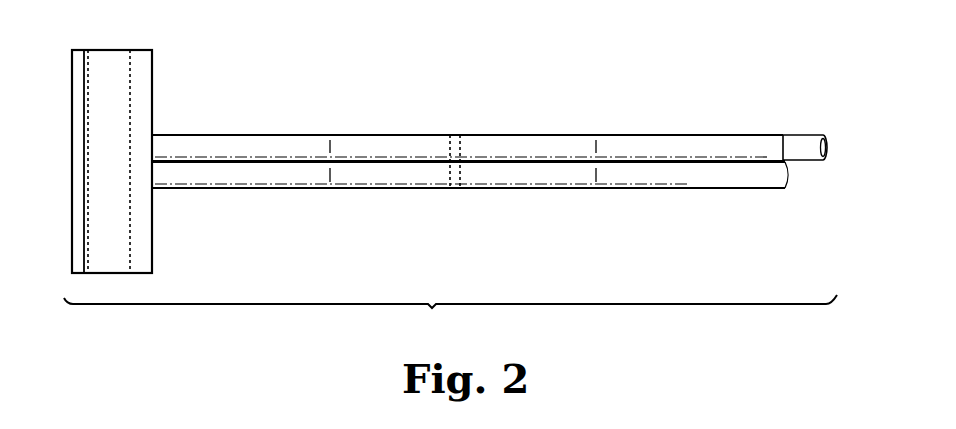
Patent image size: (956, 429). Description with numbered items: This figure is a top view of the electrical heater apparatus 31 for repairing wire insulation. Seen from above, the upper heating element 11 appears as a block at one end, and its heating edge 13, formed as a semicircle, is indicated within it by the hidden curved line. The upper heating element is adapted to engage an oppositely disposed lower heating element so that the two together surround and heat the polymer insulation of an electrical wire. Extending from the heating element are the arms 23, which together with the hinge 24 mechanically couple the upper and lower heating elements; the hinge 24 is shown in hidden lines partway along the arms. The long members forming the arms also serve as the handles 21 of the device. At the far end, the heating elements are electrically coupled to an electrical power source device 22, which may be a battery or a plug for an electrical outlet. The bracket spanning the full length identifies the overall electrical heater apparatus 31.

The upper heating element 11 is at (77, 78).
The heating edge 13 is at (130, 84).
The handles 21 is at (682, 147).
The electrical power source device 22 is at (808, 143).
The arms 23 is at (257, 142).
The hinge 24 is at (461, 150).
The electrical heater apparatus 31 is at (450, 314).